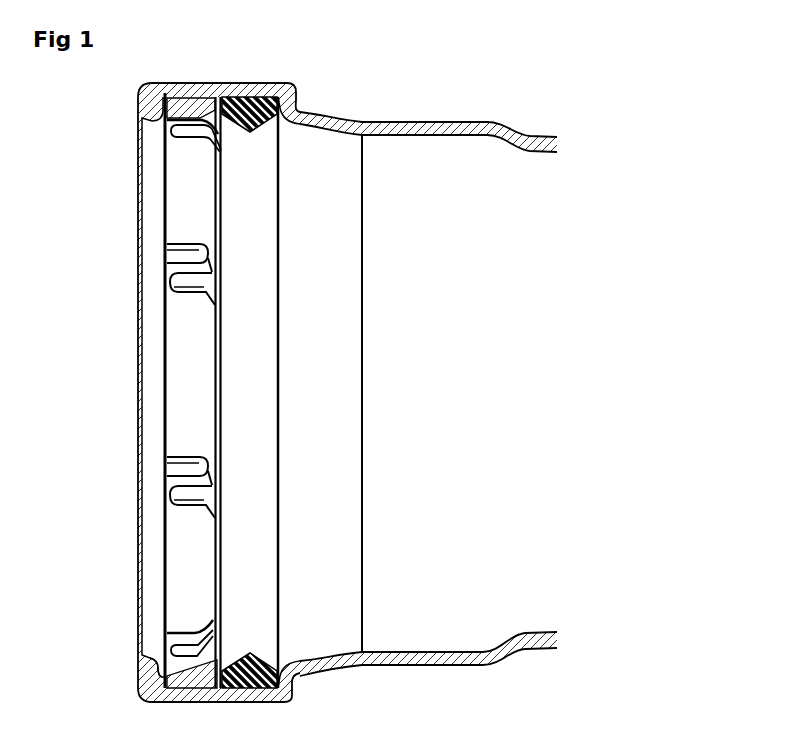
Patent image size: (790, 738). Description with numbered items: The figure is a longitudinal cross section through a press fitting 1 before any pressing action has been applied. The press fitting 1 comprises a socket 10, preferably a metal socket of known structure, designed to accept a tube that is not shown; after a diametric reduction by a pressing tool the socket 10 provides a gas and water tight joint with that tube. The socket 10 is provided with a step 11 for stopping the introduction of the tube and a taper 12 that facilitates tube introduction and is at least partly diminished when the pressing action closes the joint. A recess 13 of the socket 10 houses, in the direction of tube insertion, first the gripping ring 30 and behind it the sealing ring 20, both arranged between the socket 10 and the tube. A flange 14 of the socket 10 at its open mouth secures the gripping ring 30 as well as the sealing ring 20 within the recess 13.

The press fitting 1 is at (684, 209).
The socket 10 is at (415, 112).
The step 11 is at (500, 157).
The taper 12 is at (318, 138).
The recess 13 is at (112, 246).
The flange 14 is at (147, 672).
The sealing ring 20 is at (252, 89).
The gripping ring 30 is at (193, 89).